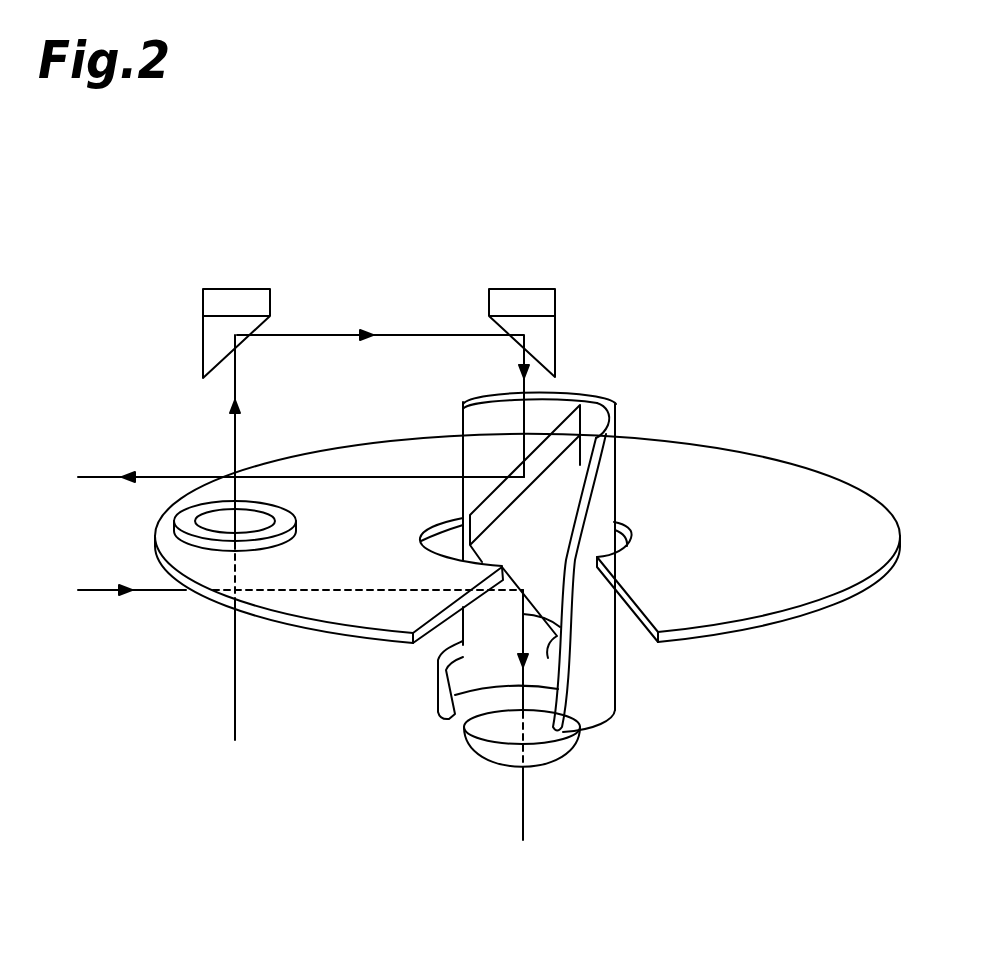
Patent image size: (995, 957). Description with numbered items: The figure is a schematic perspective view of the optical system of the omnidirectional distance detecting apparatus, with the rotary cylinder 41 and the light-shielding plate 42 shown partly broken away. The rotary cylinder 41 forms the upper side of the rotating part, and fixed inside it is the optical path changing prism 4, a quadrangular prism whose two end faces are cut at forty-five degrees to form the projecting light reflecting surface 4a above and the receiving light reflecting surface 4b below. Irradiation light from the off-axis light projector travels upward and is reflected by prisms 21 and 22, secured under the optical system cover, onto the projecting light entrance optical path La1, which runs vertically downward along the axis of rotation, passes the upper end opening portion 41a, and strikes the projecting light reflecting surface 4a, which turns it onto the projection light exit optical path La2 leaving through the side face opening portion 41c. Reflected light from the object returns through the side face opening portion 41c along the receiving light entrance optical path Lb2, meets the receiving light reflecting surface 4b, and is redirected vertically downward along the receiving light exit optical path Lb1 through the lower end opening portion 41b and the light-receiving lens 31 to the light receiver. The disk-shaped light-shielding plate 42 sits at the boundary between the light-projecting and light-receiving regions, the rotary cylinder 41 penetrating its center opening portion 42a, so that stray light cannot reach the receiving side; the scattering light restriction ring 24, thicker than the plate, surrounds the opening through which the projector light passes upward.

The optical path changing prism 4 is at (511, 519).
The projecting light reflecting surface 4a is at (497, 505).
The receiving light reflecting surface 4b is at (545, 650).
The prism 21 is at (220, 297).
The prism 22 is at (530, 297).
The scattering light restriction ring 24 is at (278, 538).
The light-receiving lens 31 is at (560, 747).
The rotary cylinder 41 is at (529, 576).
The upper end opening portion 41a is at (593, 402).
The lower end opening portion 41b is at (462, 715).
The side face opening portion 41c is at (461, 498).
The light-shielding plate 42 is at (527, 505).
The center opening portion 42a is at (618, 522).
The projecting light entrance optical path La1 is at (512, 353).
The projection light exit optical path La2 is at (157, 477).
The receiving light exit optical path Lb1 is at (523, 614).
The receiving light entrance optical path Lb2 is at (153, 593).